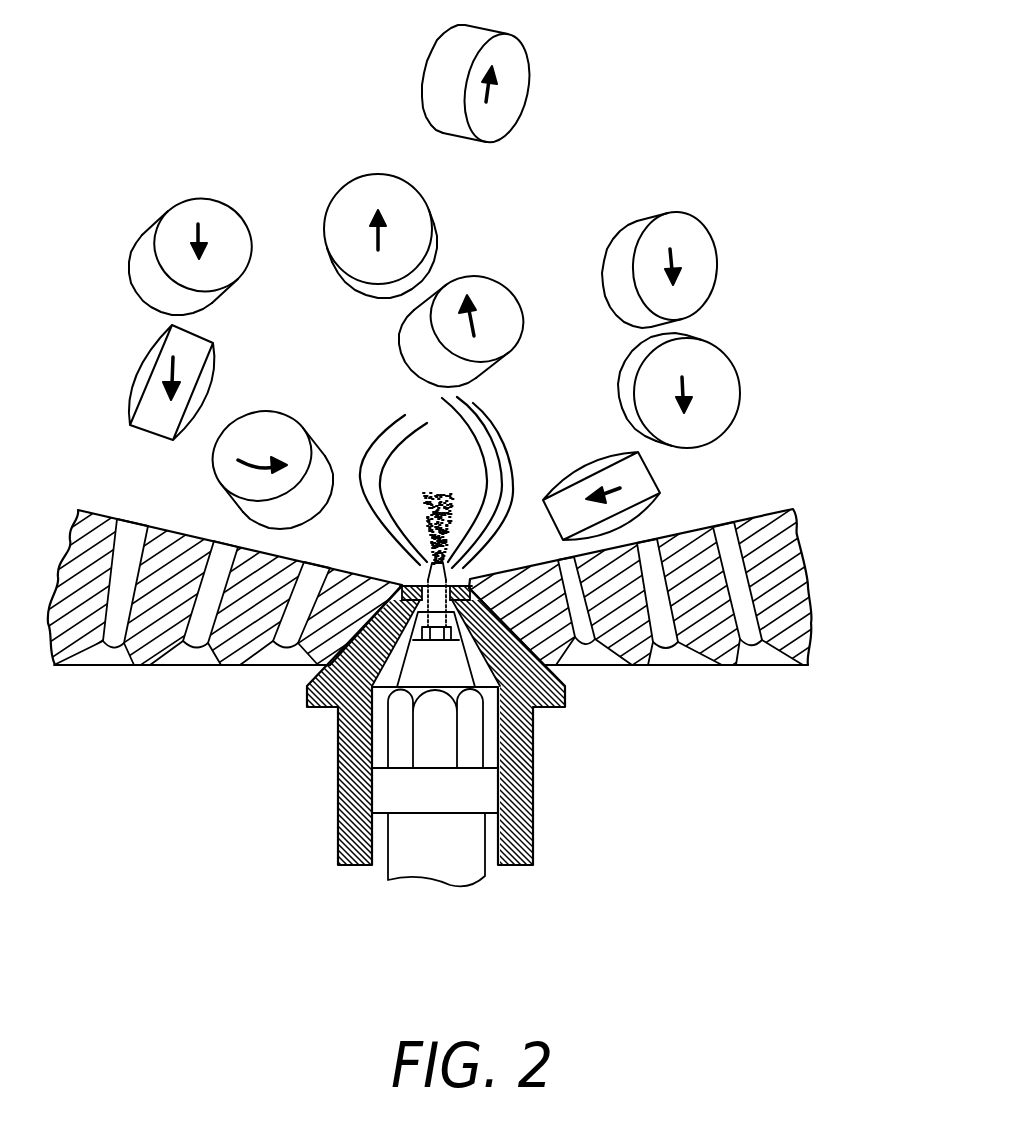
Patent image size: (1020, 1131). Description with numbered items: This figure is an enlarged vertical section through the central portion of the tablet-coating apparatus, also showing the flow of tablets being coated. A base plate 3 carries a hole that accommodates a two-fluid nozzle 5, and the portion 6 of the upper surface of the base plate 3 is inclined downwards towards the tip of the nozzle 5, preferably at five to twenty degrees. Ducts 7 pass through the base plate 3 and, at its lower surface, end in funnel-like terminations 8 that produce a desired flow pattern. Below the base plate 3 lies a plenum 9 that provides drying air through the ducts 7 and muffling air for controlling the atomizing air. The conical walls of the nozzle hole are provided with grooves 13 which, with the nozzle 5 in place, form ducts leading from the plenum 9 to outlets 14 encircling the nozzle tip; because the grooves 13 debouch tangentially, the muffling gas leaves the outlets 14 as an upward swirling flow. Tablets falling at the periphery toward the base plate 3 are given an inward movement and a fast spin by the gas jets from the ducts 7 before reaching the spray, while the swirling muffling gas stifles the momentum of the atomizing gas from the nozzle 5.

The base plate 3 is at (510, 586).
The two-fluid nozzle 5 is at (447, 730).
The portion of the upper surface of the base plate 6 is at (562, 592).
The ducts 7 is at (145, 527).
The funnel-like terminations 8 is at (688, 655).
The plenum 9 is at (226, 795).
The grooves 13 is at (558, 653).
The outlets 14 is at (468, 585).